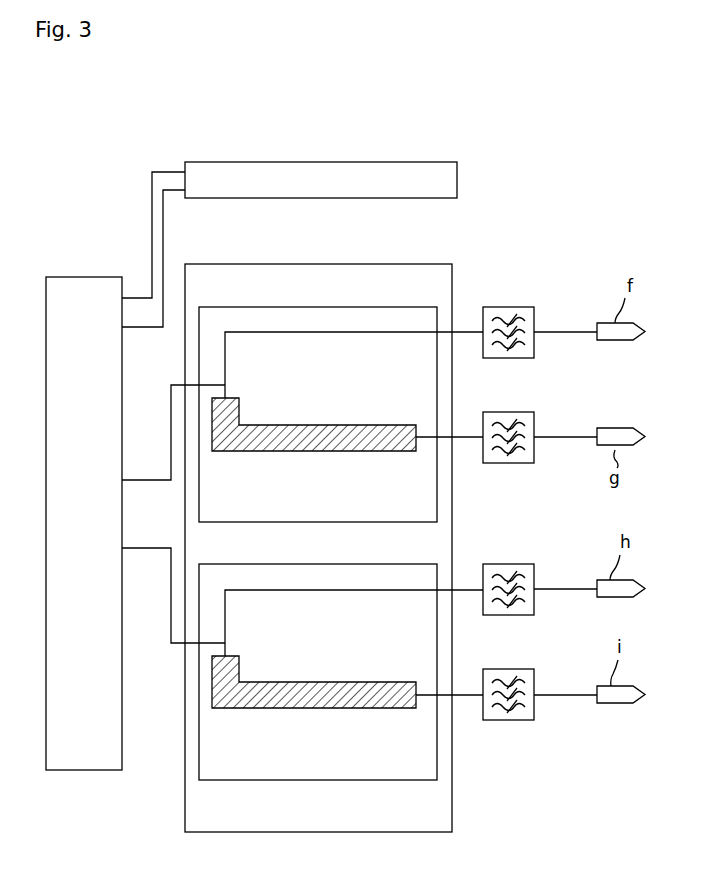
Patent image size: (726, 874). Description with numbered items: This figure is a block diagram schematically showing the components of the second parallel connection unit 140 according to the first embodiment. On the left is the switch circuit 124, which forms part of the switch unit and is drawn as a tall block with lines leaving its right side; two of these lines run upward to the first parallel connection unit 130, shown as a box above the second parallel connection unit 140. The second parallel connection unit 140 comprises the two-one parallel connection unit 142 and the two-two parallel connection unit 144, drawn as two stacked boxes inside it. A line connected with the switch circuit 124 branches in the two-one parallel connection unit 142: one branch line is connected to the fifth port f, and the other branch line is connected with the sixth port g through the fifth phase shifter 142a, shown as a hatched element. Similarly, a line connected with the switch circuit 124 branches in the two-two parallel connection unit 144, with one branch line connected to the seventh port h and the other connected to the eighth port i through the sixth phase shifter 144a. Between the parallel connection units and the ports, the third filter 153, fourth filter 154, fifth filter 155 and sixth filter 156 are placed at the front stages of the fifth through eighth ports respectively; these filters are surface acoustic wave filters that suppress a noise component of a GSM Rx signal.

The switch circuit 124 is at (85, 770).
The first parallel connection unit 130 is at (328, 162).
The second parallel connection unit 140 is at (313, 264).
The 2-1 parallel connection unit 142 is at (317, 307).
The fifth phase shifter 142a is at (311, 425).
The 2-2 parallel connection unit 144 is at (320, 564).
The sixth phase shifter 144a is at (311, 681).
The third filter 153 is at (505, 307).
The fourth filter 154 is at (510, 412).
The fifth filter 155 is at (507, 564).
The sixth filter 156 is at (507, 720).